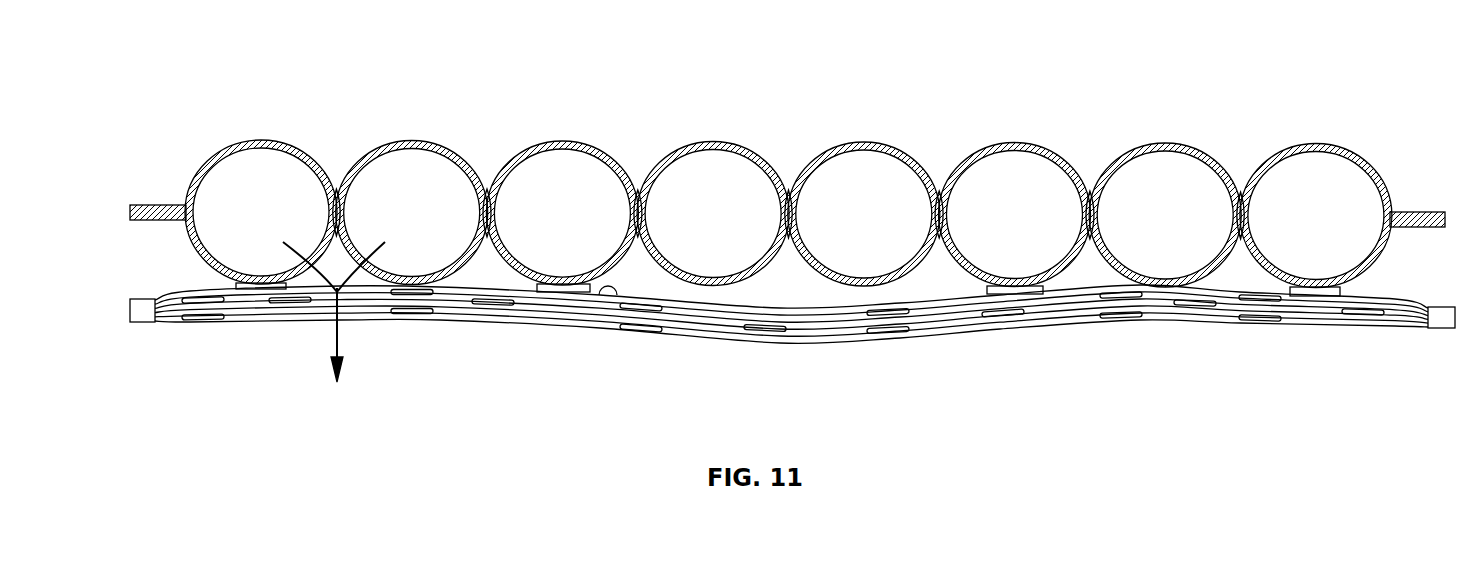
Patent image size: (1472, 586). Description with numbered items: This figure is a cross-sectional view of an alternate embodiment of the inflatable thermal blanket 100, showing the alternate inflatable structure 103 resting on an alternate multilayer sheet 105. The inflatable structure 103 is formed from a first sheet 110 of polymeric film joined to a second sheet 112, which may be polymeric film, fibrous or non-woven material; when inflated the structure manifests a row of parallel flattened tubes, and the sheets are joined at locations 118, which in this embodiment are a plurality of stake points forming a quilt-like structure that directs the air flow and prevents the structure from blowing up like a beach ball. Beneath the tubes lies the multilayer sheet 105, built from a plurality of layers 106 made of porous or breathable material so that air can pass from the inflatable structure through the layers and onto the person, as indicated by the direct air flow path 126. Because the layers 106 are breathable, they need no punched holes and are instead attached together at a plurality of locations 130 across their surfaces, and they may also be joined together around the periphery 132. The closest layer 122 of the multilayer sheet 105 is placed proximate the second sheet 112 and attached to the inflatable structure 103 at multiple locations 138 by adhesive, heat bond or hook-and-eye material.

The inflatable thermal blanket 100 is at (487, 88).
The inflatable structure 103 is at (1042, 140).
The multilayer sheet 105 is at (810, 347).
The layers 106 is at (1082, 317).
The first sheet 110 is at (862, 143).
The second sheet 112 is at (712, 282).
The locations 118 is at (638, 188).
The closest layer 122 is at (599, 297).
The direct air flow path 126 is at (338, 342).
The locations 130 is at (497, 305).
The periphery 132 is at (140, 323).
The locations 138 is at (1352, 290).